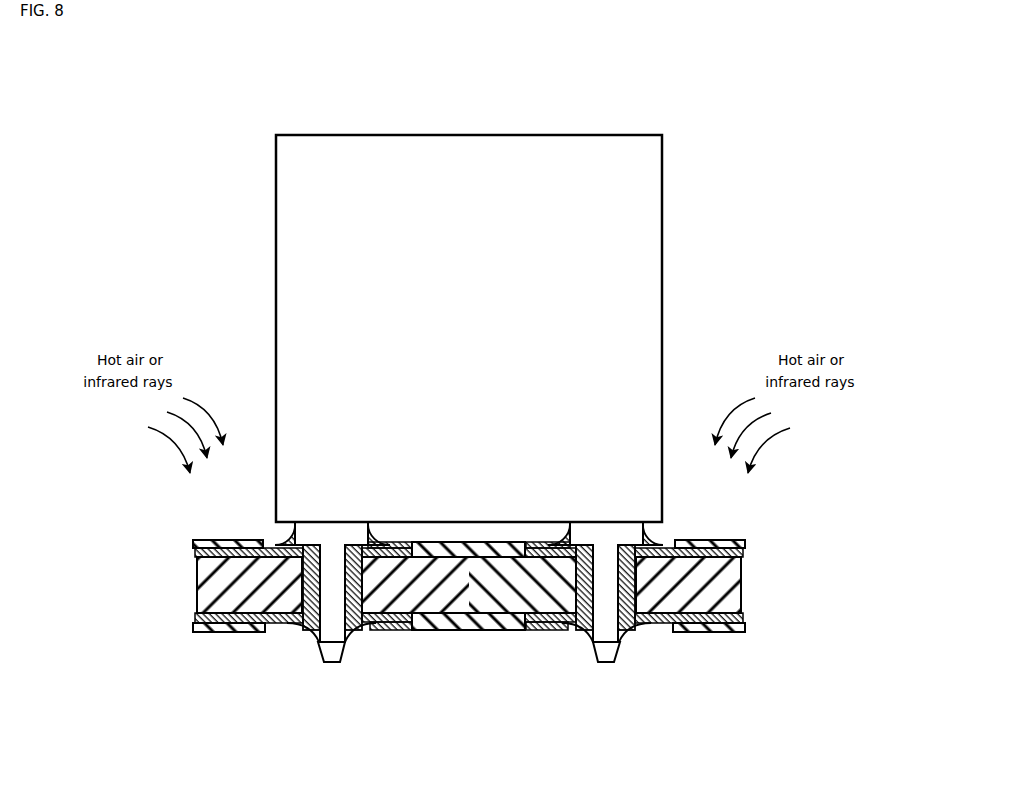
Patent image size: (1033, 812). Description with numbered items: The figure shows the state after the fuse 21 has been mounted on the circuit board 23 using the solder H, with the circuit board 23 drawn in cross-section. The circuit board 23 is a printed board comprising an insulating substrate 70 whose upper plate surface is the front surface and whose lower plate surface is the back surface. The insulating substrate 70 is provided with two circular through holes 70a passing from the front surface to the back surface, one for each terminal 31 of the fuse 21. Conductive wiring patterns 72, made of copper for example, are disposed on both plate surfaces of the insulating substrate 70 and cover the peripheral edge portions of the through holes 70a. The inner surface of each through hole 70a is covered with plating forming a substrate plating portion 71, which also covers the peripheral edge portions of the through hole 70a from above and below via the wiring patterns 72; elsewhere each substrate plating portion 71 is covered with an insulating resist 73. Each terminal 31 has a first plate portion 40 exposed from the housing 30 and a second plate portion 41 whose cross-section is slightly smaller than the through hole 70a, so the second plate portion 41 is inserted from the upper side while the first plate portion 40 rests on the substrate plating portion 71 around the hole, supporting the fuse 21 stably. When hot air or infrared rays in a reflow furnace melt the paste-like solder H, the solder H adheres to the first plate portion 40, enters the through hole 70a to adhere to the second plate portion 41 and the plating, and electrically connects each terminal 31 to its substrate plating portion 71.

The fuse 21 is at (598, 102).
The housing 30 is at (663, 213).
The first plate portion 40 is at (468, 605).
The second plate portion 41 is at (320, 663).
The terminal 31 is at (460, 700).
The circuit board 23 is at (464, 545).
The insulating substrate 70 is at (192, 580).
The through hole 70a is at (293, 527).
The substrate plating portion 71 is at (193, 543).
The wiring pattern 72 is at (405, 552).
The resist 73 is at (228, 542).
The solder H is at (308, 546).